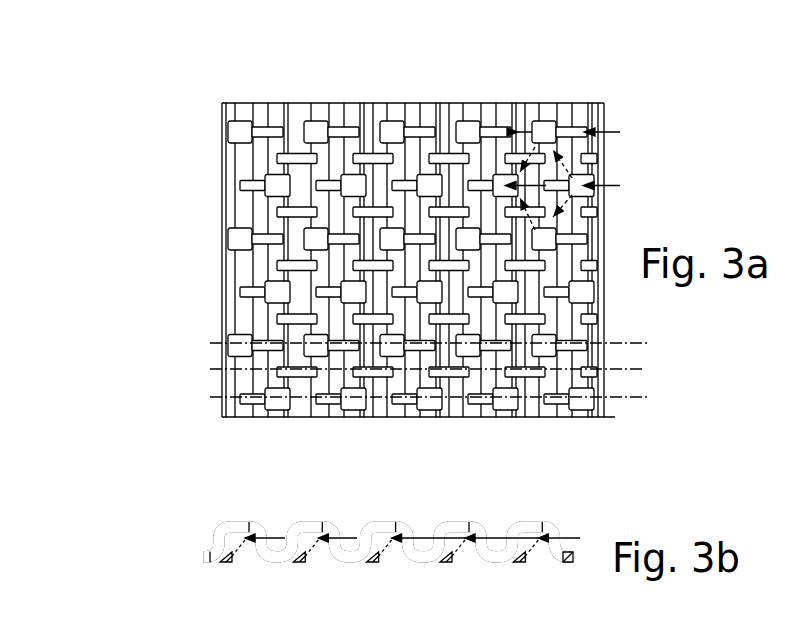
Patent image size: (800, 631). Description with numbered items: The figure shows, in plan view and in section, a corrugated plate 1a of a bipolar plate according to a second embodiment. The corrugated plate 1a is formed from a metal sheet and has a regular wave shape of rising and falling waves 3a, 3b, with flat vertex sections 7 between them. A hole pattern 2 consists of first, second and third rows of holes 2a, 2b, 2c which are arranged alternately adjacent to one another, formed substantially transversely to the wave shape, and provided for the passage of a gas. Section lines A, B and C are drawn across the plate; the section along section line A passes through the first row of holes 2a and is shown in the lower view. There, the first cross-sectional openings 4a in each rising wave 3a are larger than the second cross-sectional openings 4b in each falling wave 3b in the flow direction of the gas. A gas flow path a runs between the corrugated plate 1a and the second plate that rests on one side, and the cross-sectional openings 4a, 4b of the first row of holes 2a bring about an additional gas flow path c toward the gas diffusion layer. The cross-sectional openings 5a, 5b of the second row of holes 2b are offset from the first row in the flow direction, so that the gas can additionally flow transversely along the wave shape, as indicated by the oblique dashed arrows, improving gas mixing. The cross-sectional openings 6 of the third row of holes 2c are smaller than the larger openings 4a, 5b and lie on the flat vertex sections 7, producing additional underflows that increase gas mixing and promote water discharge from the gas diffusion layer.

In FIG. 3A, the corrugated plate 1a is at (190, 247).
In FIG. 3A, the hole pattern 2 is at (243, 136).
In FIG. 3A, the first row of holes 2a is at (630, 186).
In FIG. 3A, the second row of holes 2b is at (632, 129).
In FIG. 3A, the third row of holes 2c is at (608, 154).
In FIG. 3A, the rising wave 3a is at (582, 110).
In FIG. 3B, the rising wave 3a is at (555, 562).
In FIG. 3A, the falling wave 3b is at (550, 110).
In FIG. 3B, the falling wave 3b is at (518, 556).
In FIG. 3A, the first cross-sectional opening 4a is at (282, 187).
In FIG. 3B, the first cross-sectional opening 4a is at (562, 520).
In FIG. 3A, the second cross-sectional opening 4b is at (248, 189).
In FIG. 3B, the second cross-sectional opening 4b is at (508, 518).
In FIG. 3A, the cross-sectional opening of the second row of holes 5a is at (422, 133).
In FIG. 3A, the cross-sectional opening of the second row of holes 5b is at (392, 132).
In FIG. 3A, the cross-sectional opening of the third row of holes 6 is at (375, 145).
In FIG. 3A, the flat vertex section 7 is at (455, 107).
In FIG. 3A, the section line A is at (650, 397).
In FIG. 3A, the section line B is at (647, 343).
In FIG. 3A, the section line C is at (645, 369).
In FIG. 3B, the gas flow path a is at (335, 537).
In FIG. 3B, the additional gas flow path c is at (465, 556).